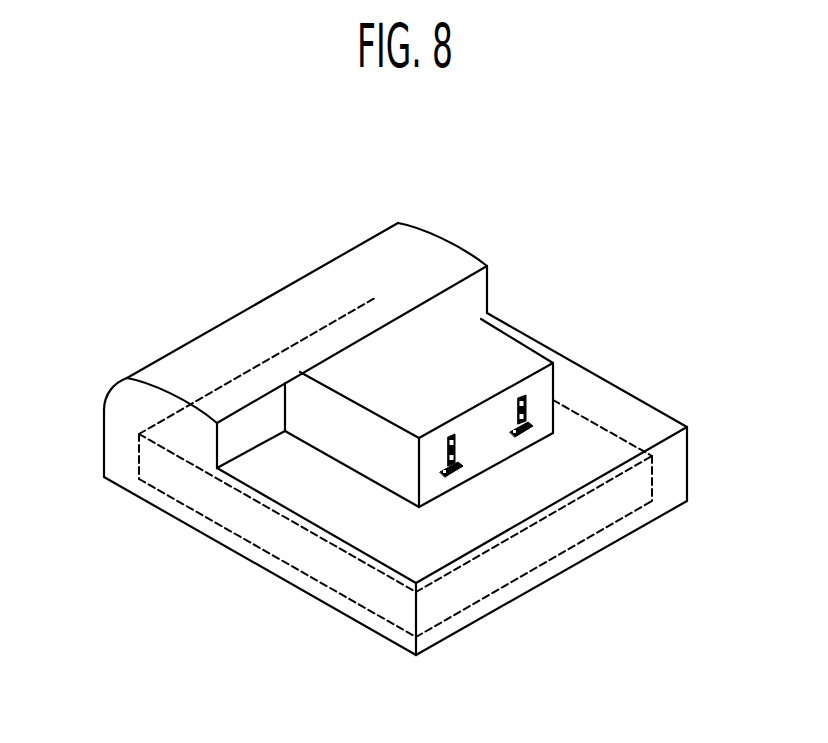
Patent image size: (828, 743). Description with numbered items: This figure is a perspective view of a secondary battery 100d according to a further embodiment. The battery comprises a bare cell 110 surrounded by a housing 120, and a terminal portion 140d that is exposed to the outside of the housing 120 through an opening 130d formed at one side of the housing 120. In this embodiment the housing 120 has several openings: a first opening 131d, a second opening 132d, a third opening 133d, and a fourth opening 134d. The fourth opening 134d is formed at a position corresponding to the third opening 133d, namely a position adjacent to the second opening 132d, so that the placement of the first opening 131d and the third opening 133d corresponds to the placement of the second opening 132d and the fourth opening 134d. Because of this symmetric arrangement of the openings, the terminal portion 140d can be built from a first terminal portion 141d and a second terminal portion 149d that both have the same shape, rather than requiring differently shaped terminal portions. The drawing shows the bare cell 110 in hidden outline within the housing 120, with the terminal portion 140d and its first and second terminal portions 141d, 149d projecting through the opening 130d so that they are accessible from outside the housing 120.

The secondary battery 100d is at (111, 208).
The bare cell 110 is at (308, 560).
The housing 120 is at (112, 492).
The opening 130d is at (725, 551).
The first opening 131d is at (470, 452).
The second opening 132d is at (540, 410).
The third opening 133d is at (471, 480).
The fourth opening 134d is at (552, 446).
The terminal portion 140d is at (478, 323).
The first terminal portion 141d is at (444, 464).
The second terminal portion 149d is at (511, 423).